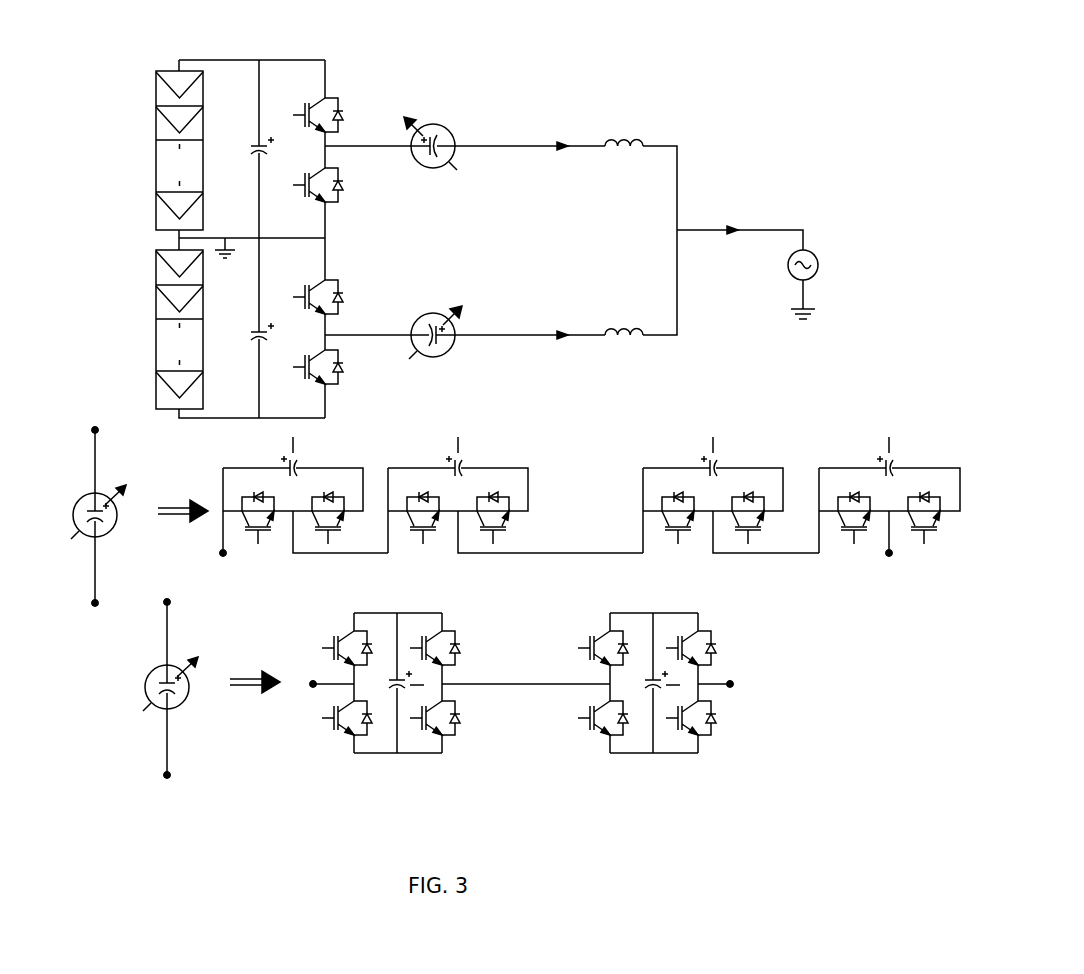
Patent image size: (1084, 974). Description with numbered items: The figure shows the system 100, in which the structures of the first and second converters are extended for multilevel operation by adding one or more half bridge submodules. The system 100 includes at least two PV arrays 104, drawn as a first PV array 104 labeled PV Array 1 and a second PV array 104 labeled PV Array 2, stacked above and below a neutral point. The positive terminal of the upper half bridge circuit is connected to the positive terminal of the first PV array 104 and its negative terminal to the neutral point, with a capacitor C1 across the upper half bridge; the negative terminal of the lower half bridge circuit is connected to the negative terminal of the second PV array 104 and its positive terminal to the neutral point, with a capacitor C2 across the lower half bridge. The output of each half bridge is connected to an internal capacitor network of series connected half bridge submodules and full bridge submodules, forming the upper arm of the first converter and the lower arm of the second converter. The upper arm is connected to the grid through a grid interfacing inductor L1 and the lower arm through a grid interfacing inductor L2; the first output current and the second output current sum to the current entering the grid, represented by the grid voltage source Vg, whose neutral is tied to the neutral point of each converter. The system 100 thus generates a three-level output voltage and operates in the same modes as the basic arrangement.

The system 100 is at (500, 399).
The PV array 104 is at (146, 240).
The PV Array 1 is at (179, 150).
The PV Array 2 is at (179, 329).
The DC-link capacitor C1 is at (252, 149).
The DC-link capacitor C2 is at (252, 328).
The filter inductor L1 is at (624, 134).
The filter inductor L2 is at (624, 323).
The grid voltage source Vg is at (790, 265).